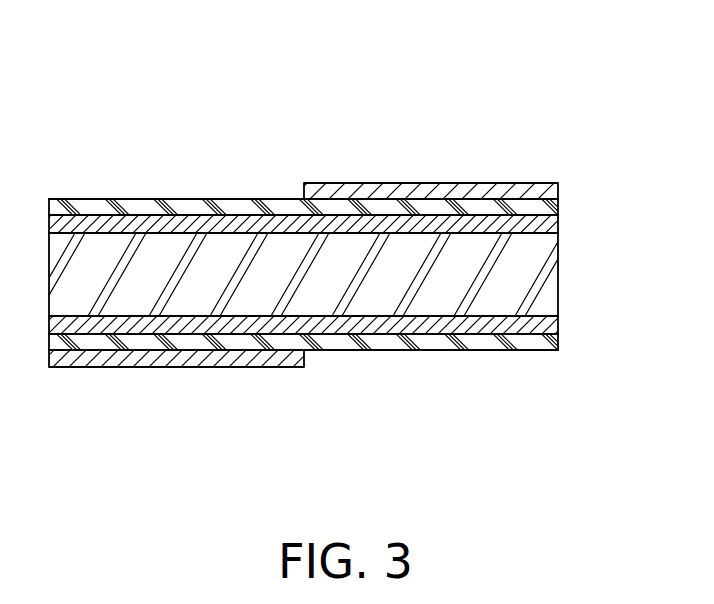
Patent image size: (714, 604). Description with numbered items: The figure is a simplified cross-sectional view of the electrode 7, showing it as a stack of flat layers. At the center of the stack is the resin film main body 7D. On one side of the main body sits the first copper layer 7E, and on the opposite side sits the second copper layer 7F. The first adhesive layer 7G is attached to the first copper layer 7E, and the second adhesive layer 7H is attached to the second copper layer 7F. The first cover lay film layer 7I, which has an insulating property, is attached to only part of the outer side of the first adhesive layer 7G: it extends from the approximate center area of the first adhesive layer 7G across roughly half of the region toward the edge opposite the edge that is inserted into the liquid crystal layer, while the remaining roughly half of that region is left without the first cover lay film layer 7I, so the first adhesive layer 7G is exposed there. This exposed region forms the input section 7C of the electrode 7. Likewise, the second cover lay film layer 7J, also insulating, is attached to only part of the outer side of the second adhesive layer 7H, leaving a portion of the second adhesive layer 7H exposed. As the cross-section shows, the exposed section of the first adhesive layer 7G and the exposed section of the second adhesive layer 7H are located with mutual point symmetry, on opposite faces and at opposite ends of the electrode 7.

The electrode 7 is at (478, 74).
The input section 7C is at (207, 187).
The resin film main body 7D is at (558, 270).
The first copper layer 7E is at (558, 229).
The second copper layer 7F is at (558, 322).
The first adhesive layer 7G is at (558, 205).
The second adhesive layer 7H is at (558, 343).
The first cover lay film layer 7I is at (493, 183).
The second cover lay film layer 7J is at (280, 367).